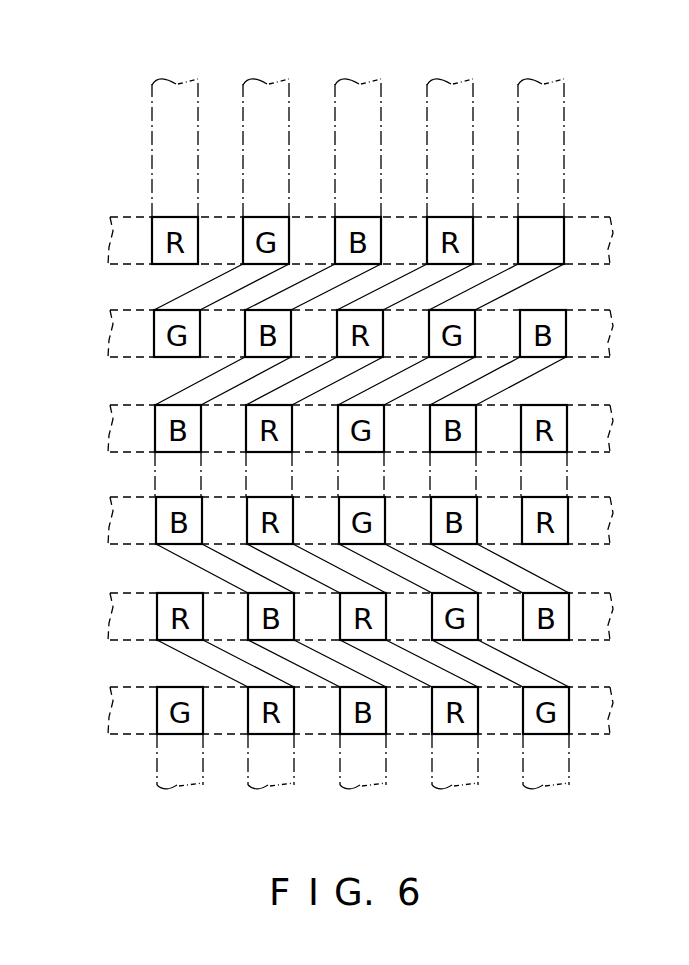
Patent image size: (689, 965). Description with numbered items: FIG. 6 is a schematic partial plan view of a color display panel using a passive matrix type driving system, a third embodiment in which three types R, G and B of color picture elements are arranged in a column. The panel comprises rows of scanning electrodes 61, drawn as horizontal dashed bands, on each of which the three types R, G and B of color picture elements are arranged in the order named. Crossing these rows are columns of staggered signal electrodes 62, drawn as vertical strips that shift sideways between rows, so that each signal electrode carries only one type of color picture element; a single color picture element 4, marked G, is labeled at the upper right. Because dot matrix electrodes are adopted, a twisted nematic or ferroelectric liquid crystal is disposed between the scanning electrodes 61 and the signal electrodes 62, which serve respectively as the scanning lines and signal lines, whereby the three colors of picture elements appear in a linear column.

The color picture element 4 is at (546, 214).
The scanning electrodes 61 is at (95, 226).
The signal electrodes 62 is at (560, 56).